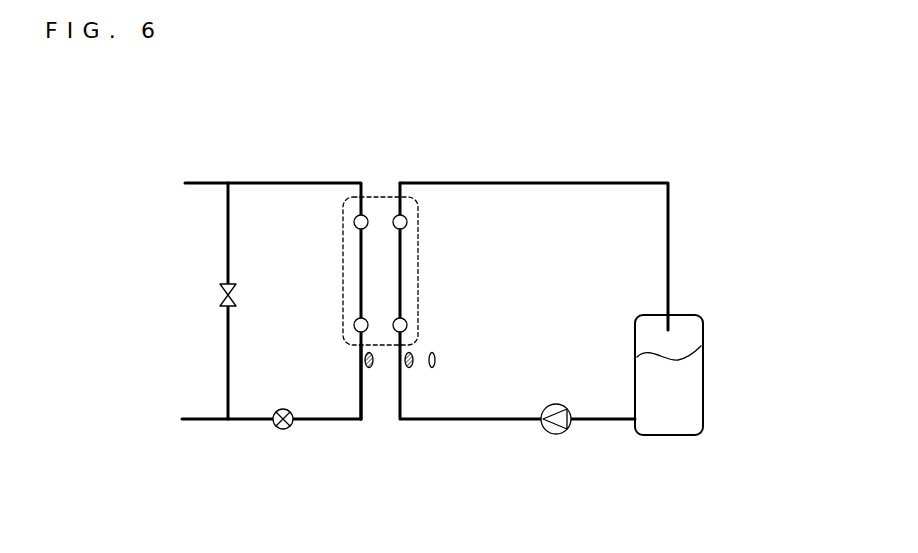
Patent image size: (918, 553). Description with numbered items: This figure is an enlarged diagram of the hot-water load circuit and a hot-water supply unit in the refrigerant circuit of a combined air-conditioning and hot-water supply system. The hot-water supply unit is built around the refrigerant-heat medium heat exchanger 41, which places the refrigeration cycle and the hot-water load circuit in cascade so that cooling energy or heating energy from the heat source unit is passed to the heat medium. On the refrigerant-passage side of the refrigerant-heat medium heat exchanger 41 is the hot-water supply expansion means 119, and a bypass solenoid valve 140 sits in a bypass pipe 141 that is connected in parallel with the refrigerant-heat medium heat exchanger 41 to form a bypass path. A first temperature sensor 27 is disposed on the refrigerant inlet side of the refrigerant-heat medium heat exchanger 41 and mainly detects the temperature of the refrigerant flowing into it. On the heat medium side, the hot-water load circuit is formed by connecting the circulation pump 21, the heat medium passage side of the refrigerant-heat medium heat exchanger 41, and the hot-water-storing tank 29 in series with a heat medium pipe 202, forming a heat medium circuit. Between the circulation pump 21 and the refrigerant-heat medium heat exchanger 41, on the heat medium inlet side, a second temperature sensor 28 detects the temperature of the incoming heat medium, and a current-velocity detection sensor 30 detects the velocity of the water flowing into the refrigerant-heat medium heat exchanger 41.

The circulation pump 21 is at (566, 432).
The first temperature sensor 27 is at (371, 370).
The second temperature sensor 28 is at (412, 353).
The hot-water-storing tank 29 is at (704, 388).
The current-velocity detection sensor 30 is at (434, 353).
The refrigerant-heat medium heat exchanger 41 is at (418, 248).
The hot-water supply expansion means 119 is at (290, 430).
The bypass solenoid valve 140 is at (236, 295).
The bypass pipe 141 is at (230, 240).
The heat medium pipe 202 is at (568, 185).